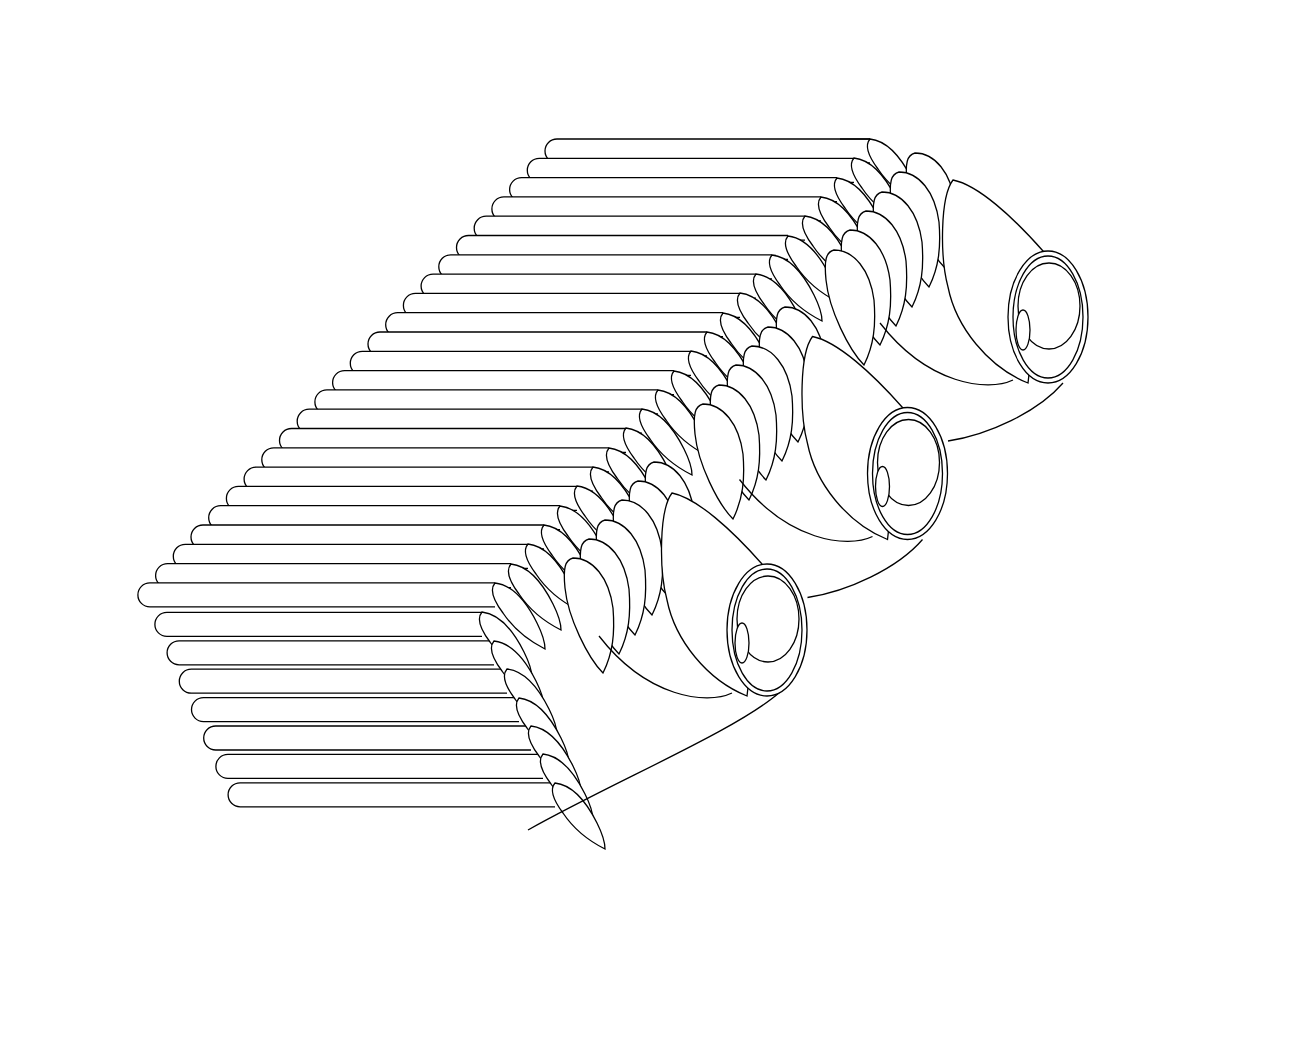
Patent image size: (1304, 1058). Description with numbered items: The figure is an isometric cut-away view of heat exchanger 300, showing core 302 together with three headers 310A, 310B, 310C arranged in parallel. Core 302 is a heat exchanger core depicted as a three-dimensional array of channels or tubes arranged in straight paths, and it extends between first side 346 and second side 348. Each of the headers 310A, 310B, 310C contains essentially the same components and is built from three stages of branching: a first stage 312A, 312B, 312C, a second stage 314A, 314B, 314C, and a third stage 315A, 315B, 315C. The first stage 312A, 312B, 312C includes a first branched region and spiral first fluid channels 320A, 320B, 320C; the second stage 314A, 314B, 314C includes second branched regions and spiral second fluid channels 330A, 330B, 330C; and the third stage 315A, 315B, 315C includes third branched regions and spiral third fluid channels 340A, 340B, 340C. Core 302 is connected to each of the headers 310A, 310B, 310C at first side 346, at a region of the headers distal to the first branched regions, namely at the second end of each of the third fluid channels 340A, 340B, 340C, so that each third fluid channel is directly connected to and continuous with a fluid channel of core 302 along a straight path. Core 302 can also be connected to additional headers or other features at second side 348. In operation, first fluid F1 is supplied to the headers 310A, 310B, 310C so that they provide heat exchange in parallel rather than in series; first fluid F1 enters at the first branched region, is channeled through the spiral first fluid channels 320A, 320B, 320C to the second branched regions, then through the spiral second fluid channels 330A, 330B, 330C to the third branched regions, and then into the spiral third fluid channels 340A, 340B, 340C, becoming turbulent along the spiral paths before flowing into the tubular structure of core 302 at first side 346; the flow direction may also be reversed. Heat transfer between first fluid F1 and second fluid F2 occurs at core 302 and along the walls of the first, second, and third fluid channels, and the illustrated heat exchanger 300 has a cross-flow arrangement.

The heat exchanger 300 is at (300, 155).
The core 302 is at (504, 413).
The first side 346 is at (858, 137).
The second side 348 is at (453, 245).
The header 310A is at (656, 693).
The header 310B is at (828, 396).
The header 310C is at (1021, 229).
The first stage 312A is at (707, 750).
The first stage 312B is at (837, 600).
The first stage 312C is at (1030, 229).
The second stage 314A is at (636, 797).
The second stage 314B is at (827, 337).
The second stage 314C is at (960, 168).
The third stage 315A is at (553, 772).
The third stage 315B is at (773, 298).
The third stage 315C is at (957, 130).
The first fluid channel 320A is at (667, 658).
The first fluid channel 320B is at (840, 502).
The first fluid channel 320C is at (972, 243).
The second fluid channel 330A is at (600, 727).
The second fluid channel 330B is at (725, 415).
The second fluid channel 330C is at (958, 168).
The third fluid channel 340A is at (548, 778).
The third fluid channel 340B is at (738, 310).
The third fluid channel 340C is at (895, 168).
The first fluid F1 is at (1092, 372).
The second fluid F2 is at (316, 832).